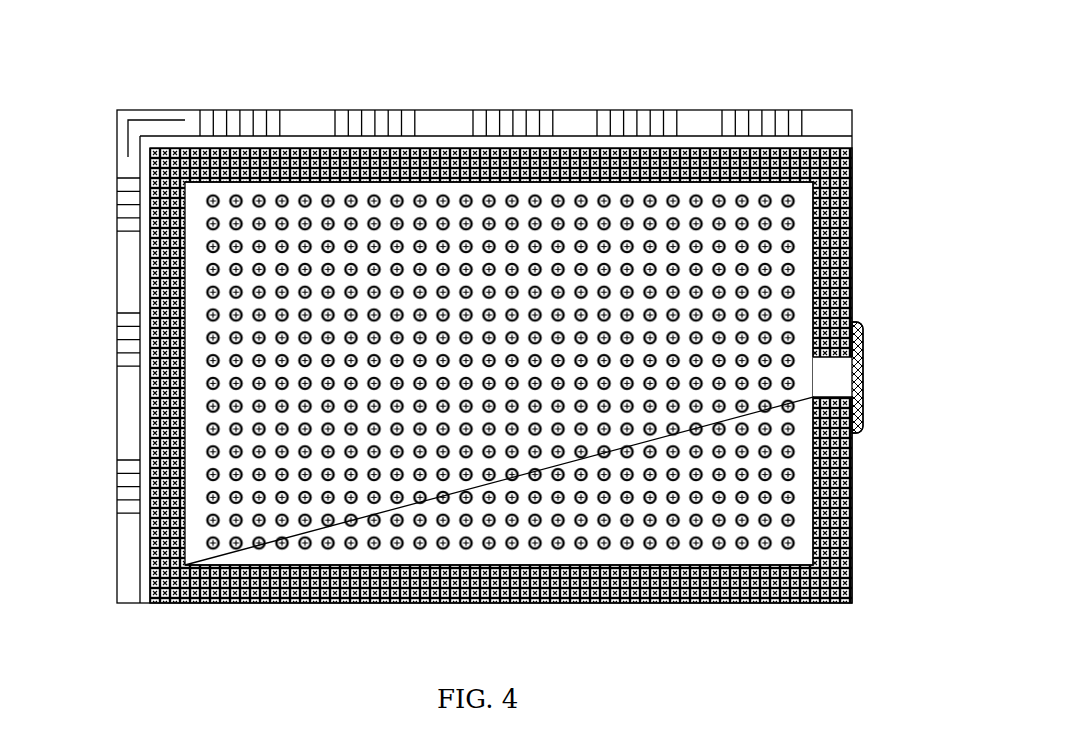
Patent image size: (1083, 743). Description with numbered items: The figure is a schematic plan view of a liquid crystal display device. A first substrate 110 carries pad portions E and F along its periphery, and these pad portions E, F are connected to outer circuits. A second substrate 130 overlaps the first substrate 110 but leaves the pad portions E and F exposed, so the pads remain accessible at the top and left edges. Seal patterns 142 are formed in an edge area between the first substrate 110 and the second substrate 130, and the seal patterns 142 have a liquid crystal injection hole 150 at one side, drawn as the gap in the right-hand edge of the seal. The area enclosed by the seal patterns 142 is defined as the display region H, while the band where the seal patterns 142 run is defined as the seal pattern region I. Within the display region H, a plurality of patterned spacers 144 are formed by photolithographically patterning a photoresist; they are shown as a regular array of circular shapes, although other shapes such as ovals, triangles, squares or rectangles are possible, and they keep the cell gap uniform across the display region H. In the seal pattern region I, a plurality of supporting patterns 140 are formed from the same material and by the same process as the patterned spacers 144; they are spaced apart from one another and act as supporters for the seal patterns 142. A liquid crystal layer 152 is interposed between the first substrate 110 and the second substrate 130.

The first substrate 110 is at (117, 540).
The second substrate 130 is at (140, 573).
The supporting patterns 140 is at (640, 148).
The seal patterns 142 is at (596, 148).
The patterned spacers 144 is at (328, 547).
The liquid crystal injection hole 150 is at (828, 377).
The liquid crystal layer 152 is at (432, 562).
The pad portion E is at (280, 110).
The pad portion F is at (117, 178).
The display region H is at (460, 202).
The seal pattern region I is at (742, 150).